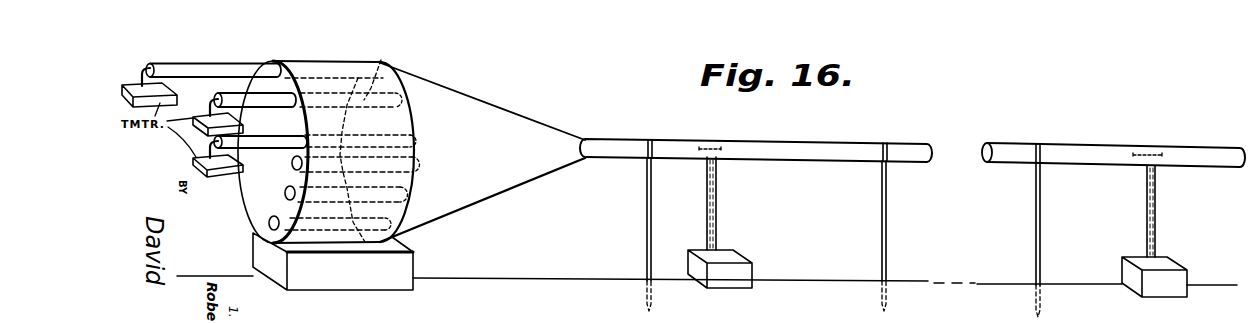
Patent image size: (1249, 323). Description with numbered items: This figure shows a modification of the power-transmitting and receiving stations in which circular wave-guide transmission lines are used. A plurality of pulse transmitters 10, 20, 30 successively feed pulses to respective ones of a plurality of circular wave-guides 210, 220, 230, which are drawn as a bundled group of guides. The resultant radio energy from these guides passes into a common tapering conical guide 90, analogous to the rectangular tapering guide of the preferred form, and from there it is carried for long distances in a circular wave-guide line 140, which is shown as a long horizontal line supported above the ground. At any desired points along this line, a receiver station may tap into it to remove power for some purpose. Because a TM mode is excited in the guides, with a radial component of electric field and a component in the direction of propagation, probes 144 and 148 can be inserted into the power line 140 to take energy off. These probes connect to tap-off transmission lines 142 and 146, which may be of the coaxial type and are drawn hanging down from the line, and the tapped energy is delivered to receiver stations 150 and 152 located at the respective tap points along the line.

The pulse transmitter 10 is at (125, 84).
The pulse transmitter 20 is at (247, 95).
The pulse transmitter 30 is at (220, 173).
The tapering conical guide 90 is at (492, 190).
The circular wave-guide 210 is at (318, 62).
The circular wave-guide 220 is at (383, 58).
The circular wave-guide 230 is at (410, 137).
The circular wave-guide line 140 is at (813, 153).
The tap-off transmission line 142 is at (718, 222).
The probe 144 is at (720, 147).
The tap-off transmission line 146 is at (1157, 216).
The probe 148 is at (1161, 153).
The receiver station 150 is at (754, 280).
The receiver station 152 is at (1175, 266).